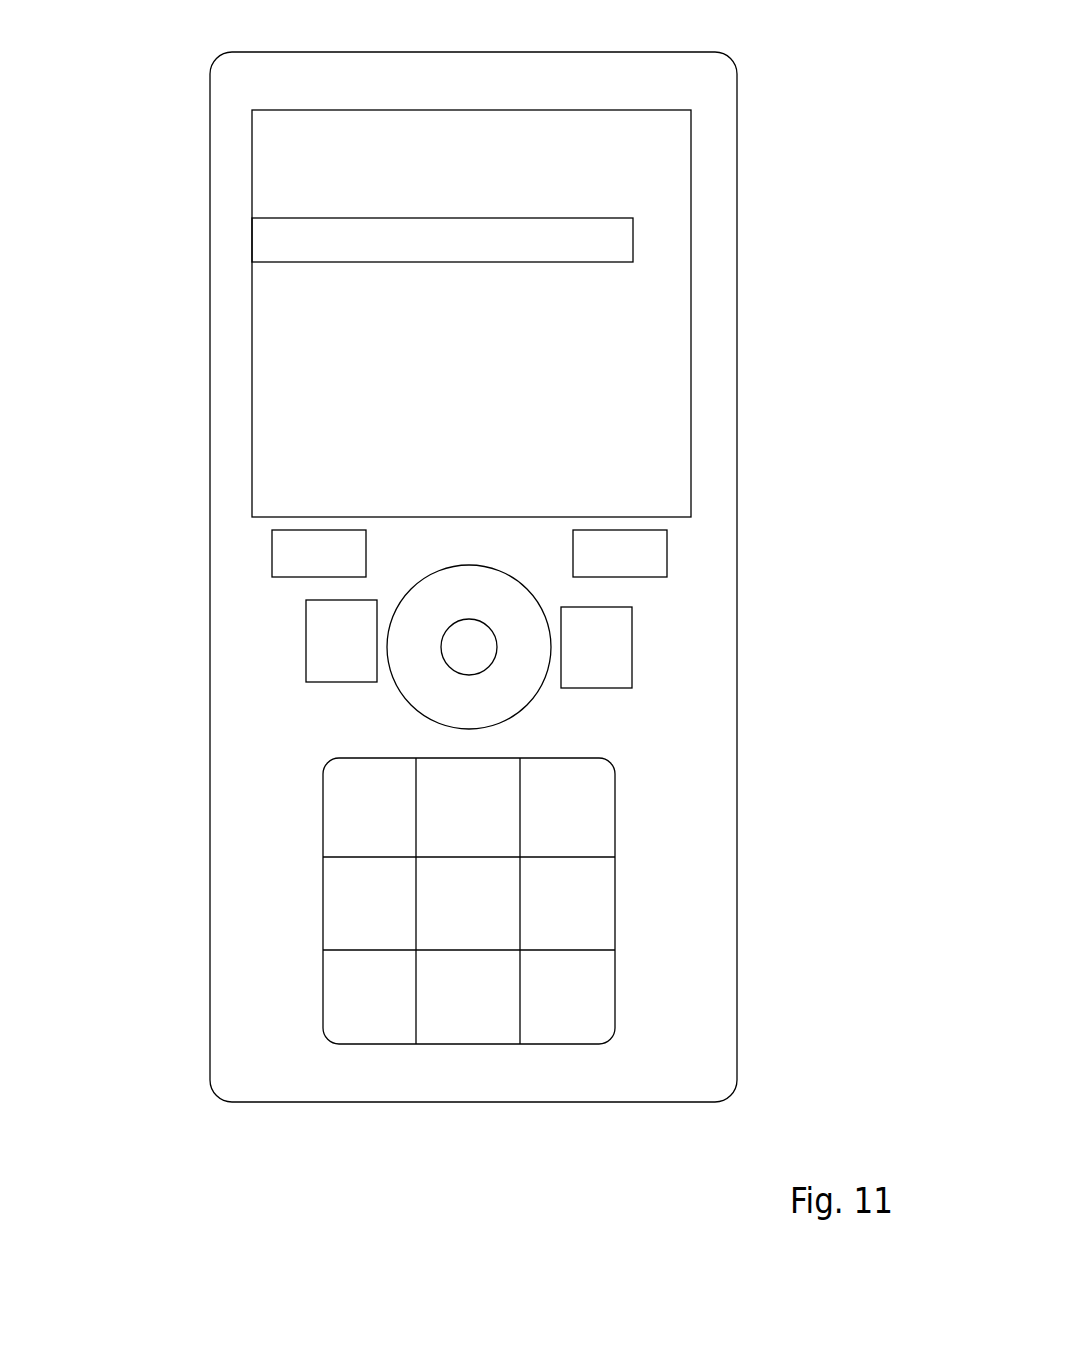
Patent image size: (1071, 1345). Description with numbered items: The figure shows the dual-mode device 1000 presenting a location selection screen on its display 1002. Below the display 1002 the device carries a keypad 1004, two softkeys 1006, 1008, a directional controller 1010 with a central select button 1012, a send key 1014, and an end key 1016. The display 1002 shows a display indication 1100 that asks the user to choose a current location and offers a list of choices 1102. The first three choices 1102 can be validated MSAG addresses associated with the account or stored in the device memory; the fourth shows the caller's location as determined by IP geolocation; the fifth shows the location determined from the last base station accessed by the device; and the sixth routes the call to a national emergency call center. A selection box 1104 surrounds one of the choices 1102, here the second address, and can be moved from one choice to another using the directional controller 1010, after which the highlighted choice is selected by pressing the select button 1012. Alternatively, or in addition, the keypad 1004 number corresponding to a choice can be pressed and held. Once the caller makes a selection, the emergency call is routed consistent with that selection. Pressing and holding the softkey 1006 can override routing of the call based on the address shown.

The dual-mode device 1000 is at (130, 28).
The display 1002 is at (564, 313).
The keypad 1004 is at (521, 901).
The softkey 1006 is at (712, 534).
The softkey 1008 is at (371, 553).
The directional controller 1010 is at (499, 654).
The select button 1012 is at (533, 670).
The send key 1014 is at (300, 641).
The end key 1016 is at (646, 647).
The display indication 1100 is at (619, 90).
The choices 1102 is at (252, 507).
The selection box 1104 is at (582, 206).